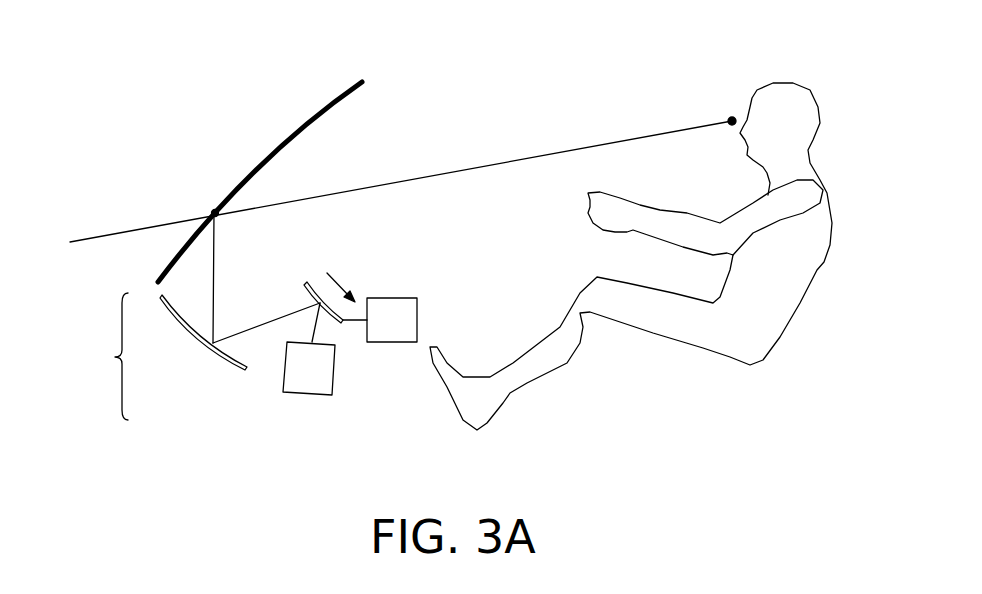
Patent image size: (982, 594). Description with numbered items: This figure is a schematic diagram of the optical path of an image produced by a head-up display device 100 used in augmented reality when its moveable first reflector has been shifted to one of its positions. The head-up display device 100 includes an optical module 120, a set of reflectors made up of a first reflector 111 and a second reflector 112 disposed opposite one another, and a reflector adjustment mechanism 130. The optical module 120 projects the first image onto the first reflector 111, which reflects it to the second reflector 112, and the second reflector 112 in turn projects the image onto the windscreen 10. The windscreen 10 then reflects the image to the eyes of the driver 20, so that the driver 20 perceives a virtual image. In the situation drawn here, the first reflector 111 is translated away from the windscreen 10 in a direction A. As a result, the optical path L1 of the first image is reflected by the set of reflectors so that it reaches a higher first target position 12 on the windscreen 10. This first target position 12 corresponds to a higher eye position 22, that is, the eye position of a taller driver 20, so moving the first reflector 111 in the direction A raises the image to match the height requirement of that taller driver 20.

The windscreen 10 is at (320, 112).
The first target position 12 is at (214, 210).
The optical path L1 is at (213, 249).
The higher eye position 22 is at (732, 117).
The driver 20 is at (800, 303).
The head-up display device 100 is at (243, 332).
The second reflector 112 is at (192, 337).
The first reflector 111 is at (307, 283).
The optical module 120 is at (328, 383).
The reflector adjustment mechanism 130 is at (412, 333).
The direction A is at (346, 283).